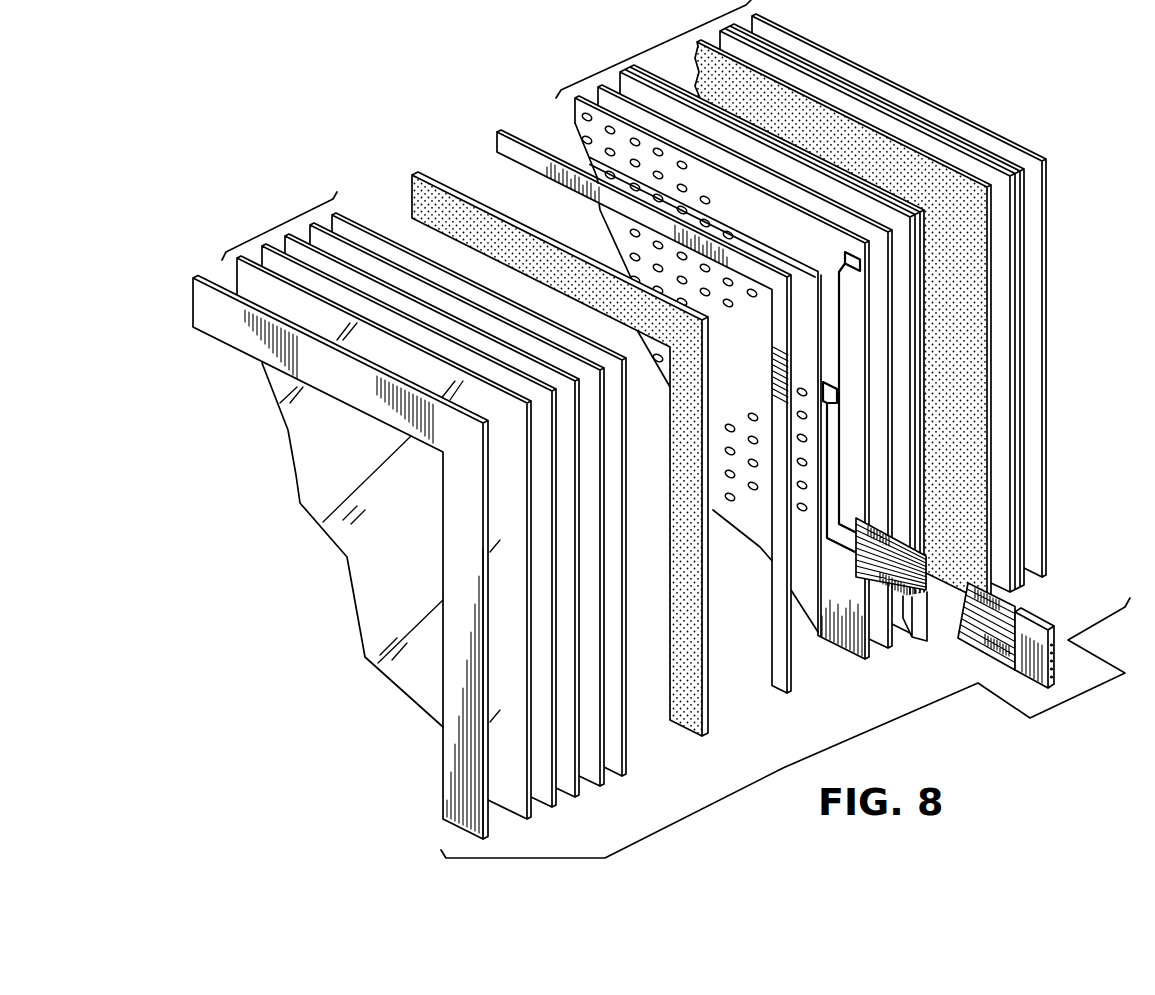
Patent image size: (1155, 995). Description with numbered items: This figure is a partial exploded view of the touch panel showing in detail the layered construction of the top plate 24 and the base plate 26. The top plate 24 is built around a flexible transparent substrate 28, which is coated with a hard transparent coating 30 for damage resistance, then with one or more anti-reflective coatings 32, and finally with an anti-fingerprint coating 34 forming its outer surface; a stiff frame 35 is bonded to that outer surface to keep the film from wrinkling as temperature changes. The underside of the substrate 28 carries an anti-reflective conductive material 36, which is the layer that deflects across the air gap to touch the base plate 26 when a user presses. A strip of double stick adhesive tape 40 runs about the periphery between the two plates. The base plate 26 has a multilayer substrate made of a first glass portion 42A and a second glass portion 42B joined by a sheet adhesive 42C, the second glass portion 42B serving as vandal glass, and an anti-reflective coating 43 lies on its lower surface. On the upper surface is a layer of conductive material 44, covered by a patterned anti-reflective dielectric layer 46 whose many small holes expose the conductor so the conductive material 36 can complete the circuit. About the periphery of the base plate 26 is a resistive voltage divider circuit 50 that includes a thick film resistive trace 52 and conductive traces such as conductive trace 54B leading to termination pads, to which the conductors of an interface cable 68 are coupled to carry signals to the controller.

The top plate 24 is at (276, 224).
The base plate 26 is at (636, 56).
The substrate 28 is at (600, 784).
The hard transparent coating 30 is at (576, 796).
The anti-reflective coatings 32 is at (553, 808).
The anti-fingerprint coating 34 is at (529, 818).
The stiff frame 35 is at (443, 797).
The anti-reflective conductive material 36 is at (623, 763).
The double stick adhesive tape 40 is at (710, 714).
The first glass portion 42A is at (922, 278).
The second glass portion 42B is at (1026, 195).
The sheet adhesive 42C is at (989, 243).
The anti-reflective coating 43 is at (1047, 165).
The conductive material layer 44 is at (893, 327).
The patterned anti-reflective dielectric layer 46 is at (870, 370).
The resistive voltage divider circuit 50 is at (825, 648).
The thick film resistive trace 52 is at (791, 472).
The conductive trace 54B is at (841, 420).
The interface cable 68 is at (1031, 624).